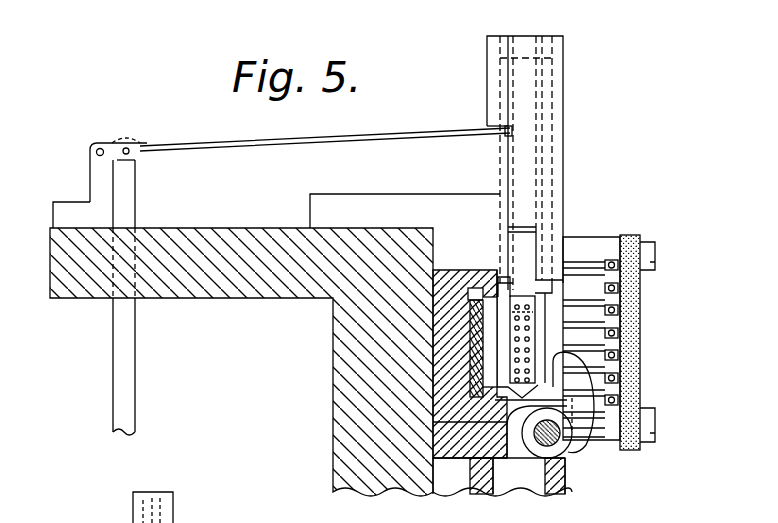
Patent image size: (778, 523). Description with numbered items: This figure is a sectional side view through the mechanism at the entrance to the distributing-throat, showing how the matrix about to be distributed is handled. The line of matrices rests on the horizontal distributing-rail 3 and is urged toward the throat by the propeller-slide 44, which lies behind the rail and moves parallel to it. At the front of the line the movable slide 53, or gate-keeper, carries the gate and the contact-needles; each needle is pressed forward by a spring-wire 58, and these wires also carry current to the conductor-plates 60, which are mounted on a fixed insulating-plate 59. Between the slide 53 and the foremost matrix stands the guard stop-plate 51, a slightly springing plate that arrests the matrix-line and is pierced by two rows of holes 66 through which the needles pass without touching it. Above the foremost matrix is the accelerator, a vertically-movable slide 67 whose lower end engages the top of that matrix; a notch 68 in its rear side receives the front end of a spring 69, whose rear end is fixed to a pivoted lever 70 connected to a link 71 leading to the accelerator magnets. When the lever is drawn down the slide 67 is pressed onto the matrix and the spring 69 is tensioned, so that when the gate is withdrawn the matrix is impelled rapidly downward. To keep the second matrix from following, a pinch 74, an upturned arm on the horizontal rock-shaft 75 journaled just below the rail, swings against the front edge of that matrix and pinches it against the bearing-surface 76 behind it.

The pivoted lever 70 is at (141, 143).
The link 71 is at (135, 392).
The spring 69 is at (362, 141).
The notch 68 is at (503, 136).
The vertically-movable slide 67 is at (525, 163).
The bearing-surface 76 is at (492, 335).
The slide 53 is at (552, 277).
The guard stop-plate 51 is at (521, 300).
The spring-wires 58 is at (591, 338).
The holes 66 is at (618, 320).
The conductor-plates 60 is at (641, 335).
The insulating-plate 59 is at (641, 381).
The propeller-slide 44 is at (470, 350).
The pinch 74 is at (544, 402).
The rock-shaft 75 is at (572, 447).
The distributing-rail 3 is at (562, 437).